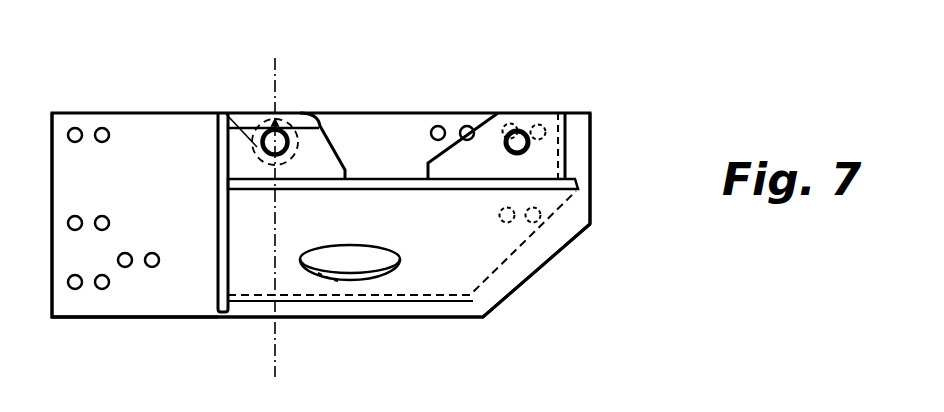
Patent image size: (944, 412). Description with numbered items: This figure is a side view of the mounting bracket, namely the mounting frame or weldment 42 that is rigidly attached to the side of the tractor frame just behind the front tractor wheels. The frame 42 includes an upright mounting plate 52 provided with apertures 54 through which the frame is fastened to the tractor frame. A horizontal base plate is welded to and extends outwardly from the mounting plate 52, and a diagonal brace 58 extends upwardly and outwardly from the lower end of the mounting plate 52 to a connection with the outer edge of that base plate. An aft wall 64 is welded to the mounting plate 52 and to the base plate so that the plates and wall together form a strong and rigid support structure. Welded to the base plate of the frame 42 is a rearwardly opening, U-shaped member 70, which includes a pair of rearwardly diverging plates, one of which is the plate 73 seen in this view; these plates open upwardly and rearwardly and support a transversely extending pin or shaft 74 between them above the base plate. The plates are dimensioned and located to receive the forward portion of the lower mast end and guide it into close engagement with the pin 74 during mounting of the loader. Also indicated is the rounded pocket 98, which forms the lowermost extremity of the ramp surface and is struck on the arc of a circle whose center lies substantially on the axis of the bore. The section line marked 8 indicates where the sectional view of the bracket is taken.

The mounting frame 42 is at (143, 56).
The upright mounting plate 52 is at (96, 112).
The apertures 54 is at (72, 229).
The diagonal brace 58 is at (448, 260).
The aft wall 64 is at (217, 232).
The U-shaped member 70 is at (567, 147).
The diverging plate 73 is at (481, 153).
The pin 74 is at (517, 131).
The rounded pocket 98 is at (345, 166).
The section line 8- 8 is at (290, 370).